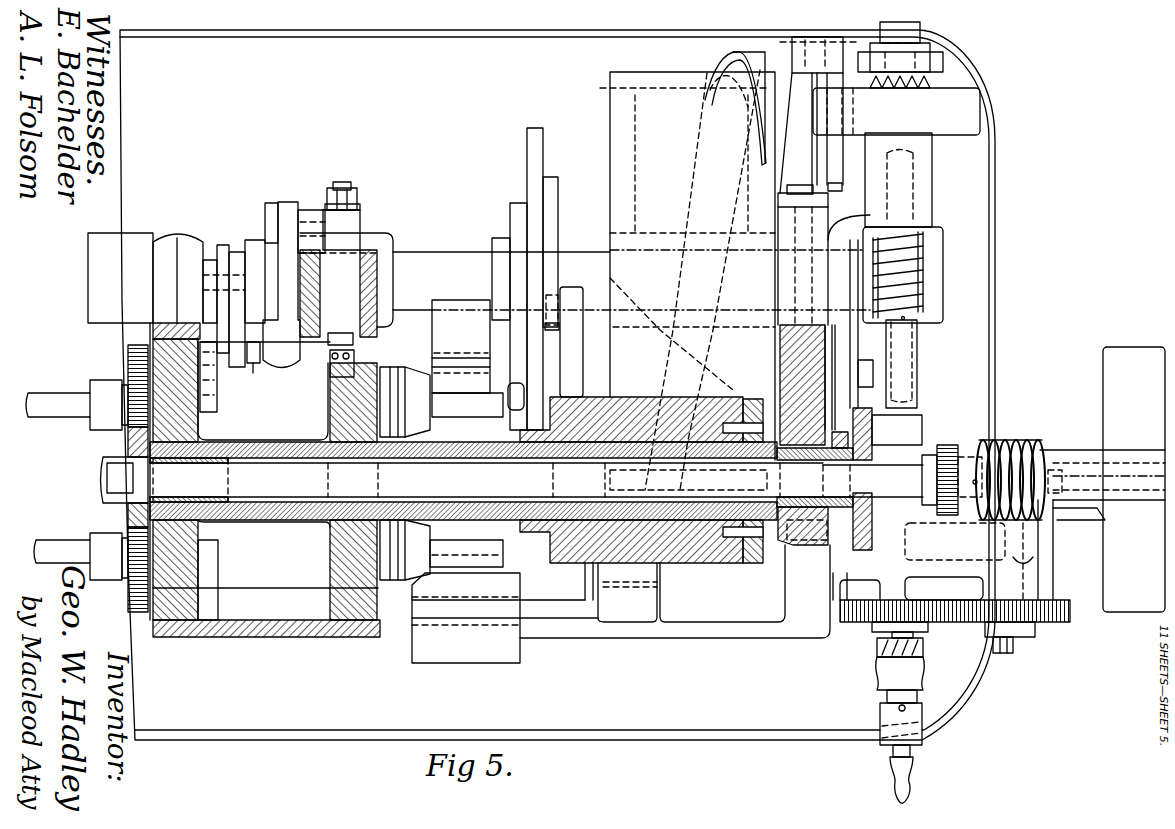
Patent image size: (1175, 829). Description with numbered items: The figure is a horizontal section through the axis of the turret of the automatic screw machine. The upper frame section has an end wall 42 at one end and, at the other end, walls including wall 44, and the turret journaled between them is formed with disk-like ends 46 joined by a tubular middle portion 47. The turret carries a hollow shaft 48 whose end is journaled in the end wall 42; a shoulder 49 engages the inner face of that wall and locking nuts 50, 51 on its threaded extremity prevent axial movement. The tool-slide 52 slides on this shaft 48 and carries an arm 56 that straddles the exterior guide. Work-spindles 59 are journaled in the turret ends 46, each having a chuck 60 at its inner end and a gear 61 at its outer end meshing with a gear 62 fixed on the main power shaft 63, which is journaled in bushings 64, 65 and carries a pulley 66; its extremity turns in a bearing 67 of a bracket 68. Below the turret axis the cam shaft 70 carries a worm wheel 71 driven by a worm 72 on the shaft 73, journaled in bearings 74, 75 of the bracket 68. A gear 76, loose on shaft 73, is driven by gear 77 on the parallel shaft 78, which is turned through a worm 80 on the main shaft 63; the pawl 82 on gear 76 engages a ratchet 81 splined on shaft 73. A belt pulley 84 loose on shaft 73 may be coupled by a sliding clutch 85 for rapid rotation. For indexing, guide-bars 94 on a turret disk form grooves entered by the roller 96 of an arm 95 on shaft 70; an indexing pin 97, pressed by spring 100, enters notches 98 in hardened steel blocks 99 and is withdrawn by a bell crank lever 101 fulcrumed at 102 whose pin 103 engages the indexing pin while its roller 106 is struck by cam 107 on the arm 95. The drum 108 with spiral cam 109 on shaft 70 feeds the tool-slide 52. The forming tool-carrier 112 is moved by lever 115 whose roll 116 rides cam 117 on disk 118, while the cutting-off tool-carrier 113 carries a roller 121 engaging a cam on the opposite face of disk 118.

The end wall 42 is at (795, 602).
The end wall 44 is at (380, 637).
The disk-like turret end 46 is at (205, 560).
The tubular middle portion 47 is at (270, 442).
The hollow shaft extension 48 is at (466, 446).
The shoulder 49 is at (780, 562).
The locking nut 50 is at (807, 539).
The locking nut 51 is at (862, 552).
The tool-slide 52 is at (590, 397).
The arm 56 is at (748, 400).
The work-spindle 59 is at (258, 598).
The chuck 60 is at (436, 370).
The spindle gear 61 is at (143, 641).
The gear 62 is at (125, 438).
The main power shaft 63 is at (1100, 515).
The bushing 64 is at (165, 480).
The bushing 65 is at (815, 435).
The pulley 66 is at (1120, 347).
The bearing 67 is at (1077, 452).
The bracket 68 is at (873, 348).
The cam shaft 70 is at (412, 262).
The worm wheel 71 is at (918, 364).
The worm 72 is at (925, 272).
The shaft 73 is at (903, 420).
The bearing 74 is at (922, 174).
The bearing 75 is at (875, 591).
The gear 76 is at (928, 622).
The gear 77 is at (1063, 610).
The shaft 78 is at (1050, 566).
The worm 80 is at (1020, 445).
The ratchet 81 is at (885, 658).
The pawl 82 is at (877, 644).
The belt pulley 84 is at (970, 117).
The clutch 85 is at (912, 58).
The guide-bar 94 is at (217, 378).
The arm 95 is at (220, 300).
The roller 96 is at (165, 322).
The indexing pin 97 is at (358, 220).
The notch 98 is at (328, 350).
The hardened steel block 99 is at (357, 352).
The spring 100 is at (357, 206).
The bell crank lever 101 is at (308, 210).
The fulcrum 102 is at (270, 232).
The pin 103 is at (338, 188).
The roller 106 is at (254, 372).
The cam 107 is at (242, 298).
The drum 108 is at (610, 90).
The spiral cam 109 is at (724, 60).
The forming tool-carrier 112 is at (455, 663).
The cutting-off tool-carrier 113 is at (455, 300).
The lever 115 is at (572, 362).
The roll 116 is at (552, 322).
The cam 117 is at (552, 227).
The disk 118 is at (543, 150).
The roller 121 is at (515, 410).